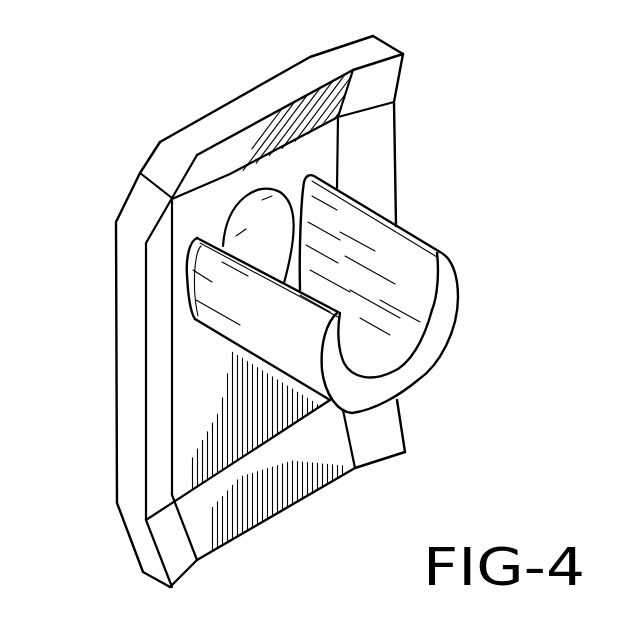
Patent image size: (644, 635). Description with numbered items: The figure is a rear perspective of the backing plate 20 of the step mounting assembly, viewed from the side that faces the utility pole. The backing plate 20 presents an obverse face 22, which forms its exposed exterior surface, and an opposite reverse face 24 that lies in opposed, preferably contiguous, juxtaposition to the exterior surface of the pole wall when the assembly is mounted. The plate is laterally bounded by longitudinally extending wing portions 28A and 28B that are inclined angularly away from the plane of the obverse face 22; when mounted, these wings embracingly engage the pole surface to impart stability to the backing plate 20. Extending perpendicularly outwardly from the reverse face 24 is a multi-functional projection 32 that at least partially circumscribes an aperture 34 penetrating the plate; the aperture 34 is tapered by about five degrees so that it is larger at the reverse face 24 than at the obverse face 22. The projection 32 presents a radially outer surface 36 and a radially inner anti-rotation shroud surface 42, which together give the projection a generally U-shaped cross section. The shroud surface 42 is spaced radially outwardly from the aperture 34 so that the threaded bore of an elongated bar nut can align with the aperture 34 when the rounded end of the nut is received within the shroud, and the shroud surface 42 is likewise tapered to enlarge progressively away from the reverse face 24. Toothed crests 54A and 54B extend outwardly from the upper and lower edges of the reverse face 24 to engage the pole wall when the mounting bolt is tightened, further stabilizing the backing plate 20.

The backing plate 20 is at (412, 178).
The obverse face 22 is at (192, 126).
The reverse face 24 is at (205, 380).
The wing portion 28A is at (372, 119).
The wing portion 28B is at (162, 352).
The multi-functional projection 32 is at (432, 224).
The aperture 34 is at (256, 231).
The radially outer surface 36 is at (207, 283).
The anti-rotation shroud surface 42 is at (410, 280).
The toothed crest 54A is at (146, 160).
The toothed crest 54B is at (170, 586).